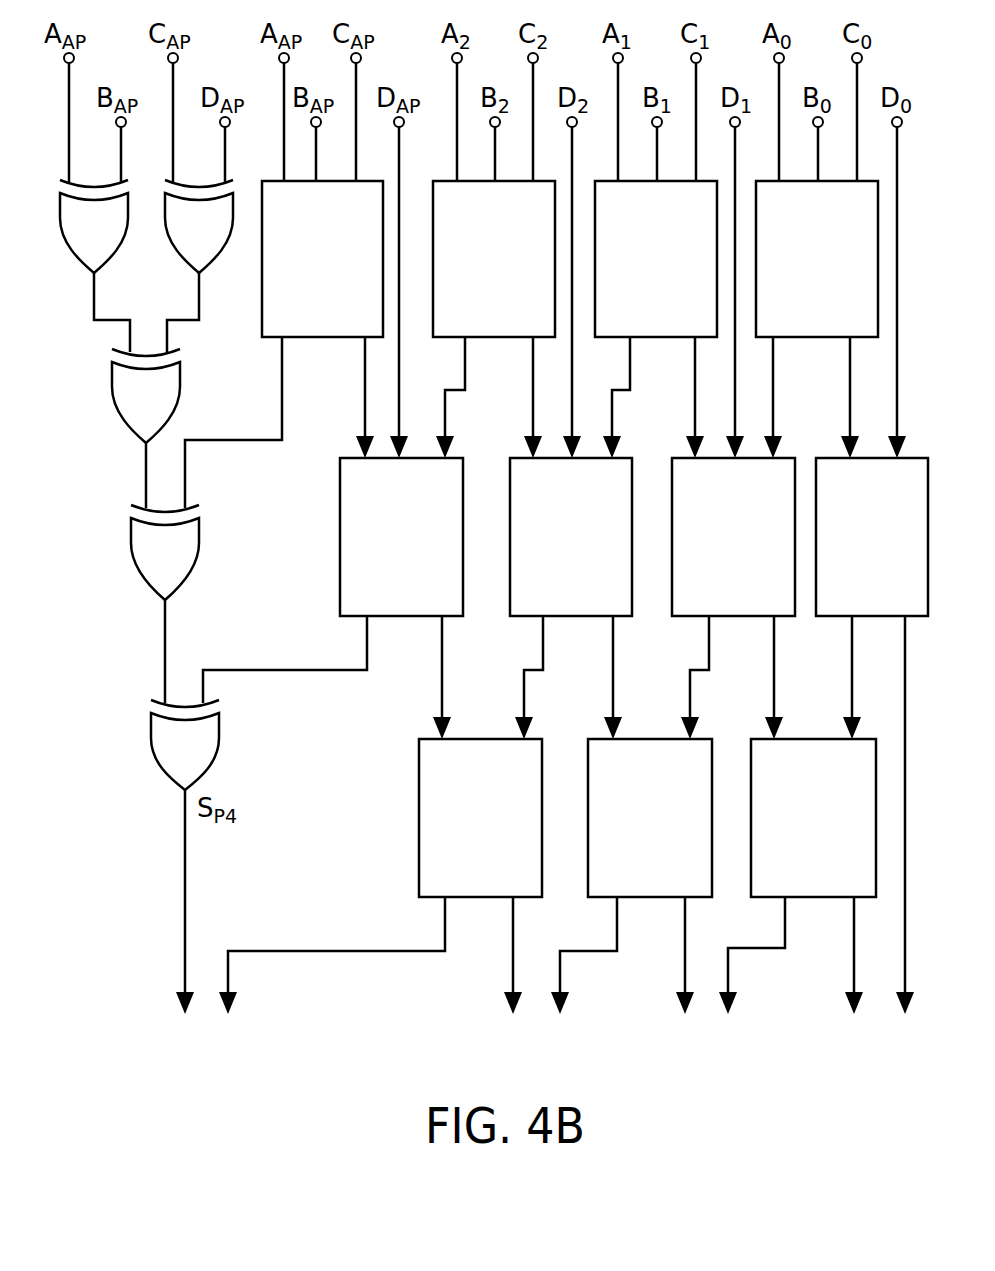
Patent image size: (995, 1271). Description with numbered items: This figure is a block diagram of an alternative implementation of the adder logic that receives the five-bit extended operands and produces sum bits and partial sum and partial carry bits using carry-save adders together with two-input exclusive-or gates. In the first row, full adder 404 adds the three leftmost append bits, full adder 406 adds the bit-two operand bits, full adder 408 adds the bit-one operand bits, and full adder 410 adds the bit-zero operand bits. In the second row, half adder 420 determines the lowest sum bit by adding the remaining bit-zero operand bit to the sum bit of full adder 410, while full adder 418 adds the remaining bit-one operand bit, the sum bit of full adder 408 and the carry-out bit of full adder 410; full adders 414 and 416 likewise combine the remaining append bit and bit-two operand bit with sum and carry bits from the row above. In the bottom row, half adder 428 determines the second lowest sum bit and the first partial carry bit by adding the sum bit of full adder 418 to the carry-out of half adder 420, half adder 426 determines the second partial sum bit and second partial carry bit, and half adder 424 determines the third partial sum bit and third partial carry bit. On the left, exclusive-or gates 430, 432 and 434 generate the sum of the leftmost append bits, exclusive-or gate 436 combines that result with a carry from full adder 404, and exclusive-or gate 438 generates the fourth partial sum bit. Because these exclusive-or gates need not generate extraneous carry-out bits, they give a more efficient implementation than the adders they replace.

The full adder 404 is at (303, 280).
The full adder 406 is at (475, 280).
The full adder 408 is at (637, 280).
The full adder 410 is at (798, 280).
The full adder 414 is at (382, 556).
The full adder 416 is at (552, 556).
The full adder 418 is at (714, 556).
The half adder 420 is at (853, 556).
The half adder 424 is at (461, 836).
The half adder 426 is at (631, 836).
The half adder 428 is at (794, 836).
The exclusive-or gate 430 is at (74, 255).
The exclusive-or gate 432 is at (178, 255).
The exclusive-or gate 434 is at (180, 377).
The exclusive-or gate 436 is at (200, 538).
The exclusive-or gate 438 is at (218, 725).